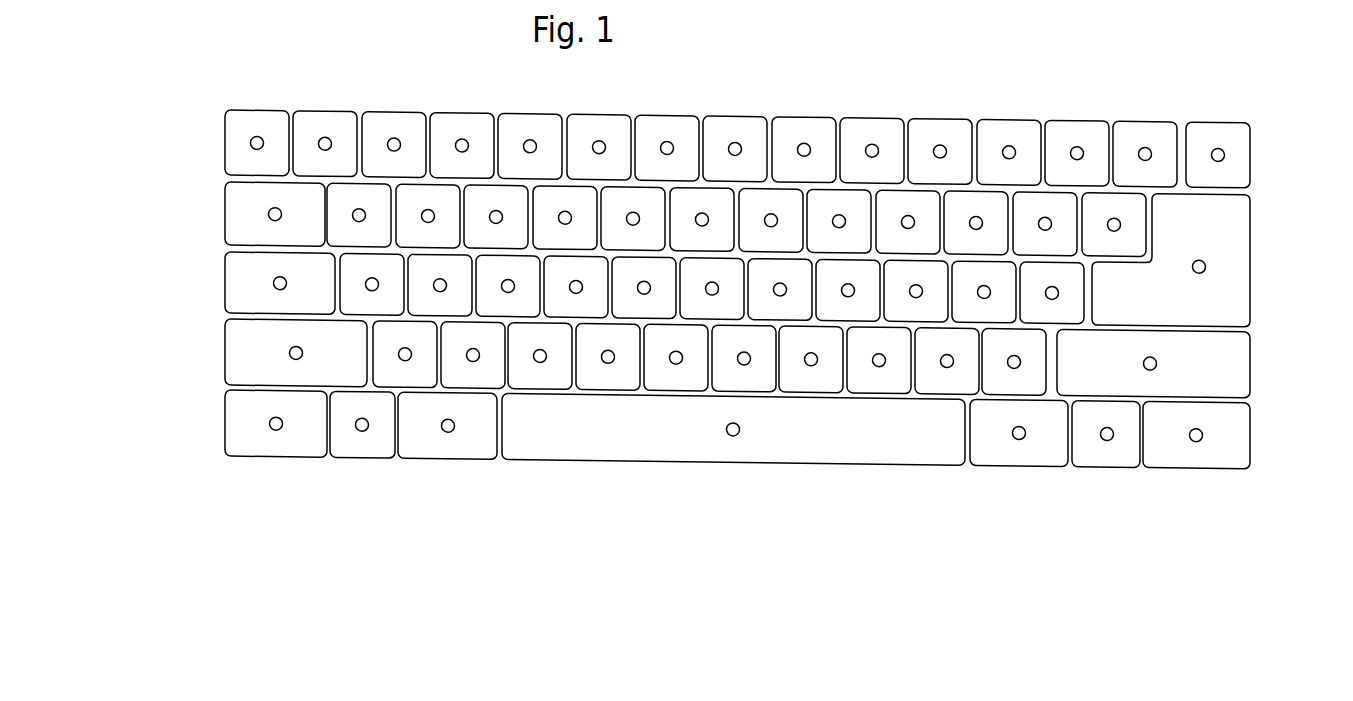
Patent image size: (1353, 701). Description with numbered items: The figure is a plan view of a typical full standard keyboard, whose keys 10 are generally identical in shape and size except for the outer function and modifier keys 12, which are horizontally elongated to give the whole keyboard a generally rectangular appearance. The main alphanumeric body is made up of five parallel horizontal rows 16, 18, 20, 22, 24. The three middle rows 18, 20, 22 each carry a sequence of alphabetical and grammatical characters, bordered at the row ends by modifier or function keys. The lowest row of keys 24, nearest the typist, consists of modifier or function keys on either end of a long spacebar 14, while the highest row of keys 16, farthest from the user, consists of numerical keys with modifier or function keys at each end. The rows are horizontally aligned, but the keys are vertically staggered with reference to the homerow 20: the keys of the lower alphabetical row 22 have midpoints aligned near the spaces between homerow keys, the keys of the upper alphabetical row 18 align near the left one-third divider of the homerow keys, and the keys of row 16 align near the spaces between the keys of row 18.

The keys 10 is at (1008, 120).
The outer function and modifier keys 12 is at (1248, 433).
The spacebar 14 is at (733, 429).
The highest row of keys 16 is at (225, 175).
The upper alphabetical row 18 is at (225, 245).
The homerow 20 is at (225, 313).
The lower alphabetical row 22 is at (225, 385).
The lowest row of keys 24 is at (225, 456).